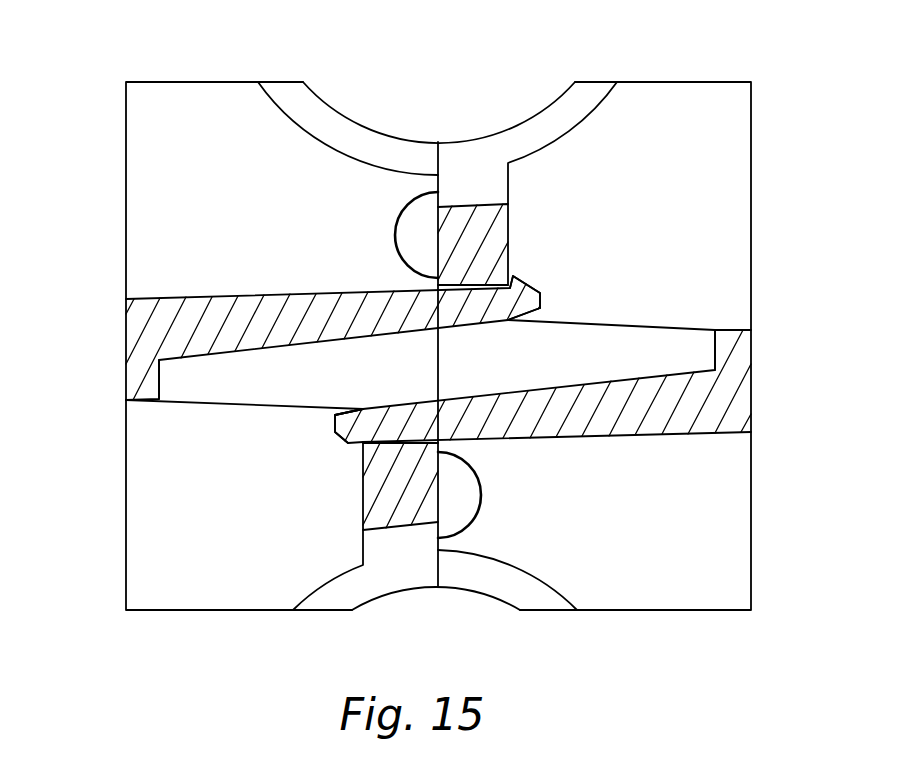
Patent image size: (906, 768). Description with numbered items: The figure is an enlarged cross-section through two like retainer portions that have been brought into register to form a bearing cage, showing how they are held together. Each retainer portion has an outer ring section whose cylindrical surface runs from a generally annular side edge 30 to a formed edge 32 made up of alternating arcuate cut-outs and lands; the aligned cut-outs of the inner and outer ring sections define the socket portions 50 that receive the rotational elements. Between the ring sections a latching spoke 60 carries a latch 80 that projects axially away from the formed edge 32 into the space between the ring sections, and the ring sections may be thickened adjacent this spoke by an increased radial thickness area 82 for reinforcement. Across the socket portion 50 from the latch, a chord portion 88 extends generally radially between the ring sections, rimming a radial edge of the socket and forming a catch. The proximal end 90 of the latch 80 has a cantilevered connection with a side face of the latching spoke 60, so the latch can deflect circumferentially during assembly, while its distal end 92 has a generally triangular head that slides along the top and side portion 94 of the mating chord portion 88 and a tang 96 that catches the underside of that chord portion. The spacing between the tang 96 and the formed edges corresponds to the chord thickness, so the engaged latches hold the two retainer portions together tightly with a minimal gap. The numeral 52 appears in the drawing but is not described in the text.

The annular side edge 30 is at (120, 550).
The formed edge 32 is at (430, 181).
The socket portion 50 is at (372, 115).
The cavity 52 is at (520, 373).
The latching spoke 60 is at (117, 377).
The latch 80 is at (272, 292).
The increased radial thickness area 82 is at (290, 386).
The chord portion 88 is at (492, 232).
The proximal end 90 is at (143, 298).
The distal end 92 is at (540, 302).
The top and side portion 94 is at (468, 276).
The tang 96 is at (528, 284).